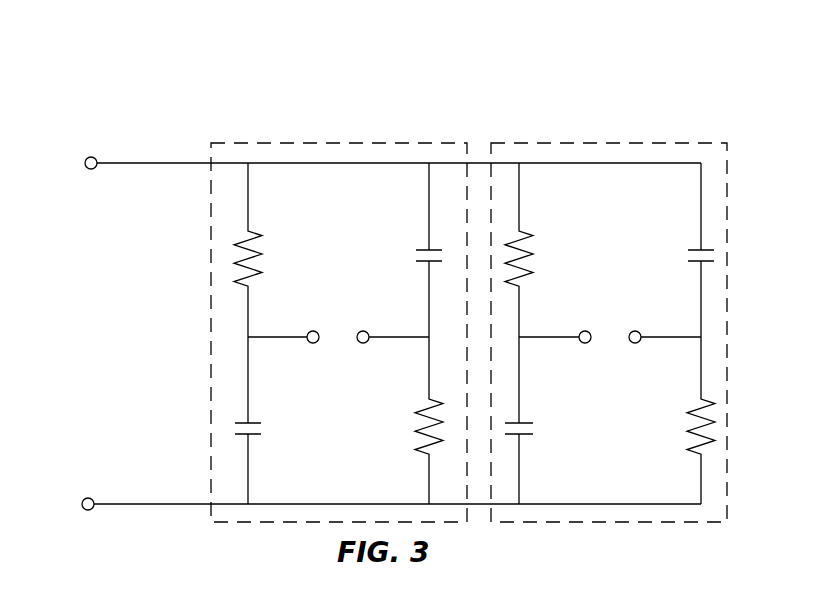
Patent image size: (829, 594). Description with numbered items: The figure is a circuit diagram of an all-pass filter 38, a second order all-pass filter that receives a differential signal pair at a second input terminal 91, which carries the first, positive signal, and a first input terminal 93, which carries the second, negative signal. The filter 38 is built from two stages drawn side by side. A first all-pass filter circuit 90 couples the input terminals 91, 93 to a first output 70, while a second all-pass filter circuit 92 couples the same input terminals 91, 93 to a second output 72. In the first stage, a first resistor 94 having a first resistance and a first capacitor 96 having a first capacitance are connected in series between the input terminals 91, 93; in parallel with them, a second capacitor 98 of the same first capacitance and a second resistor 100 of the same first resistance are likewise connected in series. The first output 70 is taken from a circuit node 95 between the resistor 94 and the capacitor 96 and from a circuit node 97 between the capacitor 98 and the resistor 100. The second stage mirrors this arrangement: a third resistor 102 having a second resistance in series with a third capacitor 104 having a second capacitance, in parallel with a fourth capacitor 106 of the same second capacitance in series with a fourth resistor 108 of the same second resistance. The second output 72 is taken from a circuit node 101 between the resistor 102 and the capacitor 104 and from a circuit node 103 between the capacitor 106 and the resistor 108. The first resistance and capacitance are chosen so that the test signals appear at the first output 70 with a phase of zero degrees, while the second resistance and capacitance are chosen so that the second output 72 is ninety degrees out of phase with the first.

The all-pass filter 38 is at (487, 77).
The first all-pass filter circuit 90 is at (293, 143).
The second all-pass filter circuit 92 is at (583, 143).
The second input terminal 91 is at (98, 177).
The first input terminal 93 is at (92, 494).
The first resistor 94 is at (233, 249).
The circuit node 95 is at (255, 333).
The first capacitor 96 is at (233, 429).
The circuit node 97 is at (424, 333).
The second capacitor 98 is at (423, 246).
The second resistor 100 is at (421, 456).
The first output 70 is at (357, 331).
The second output 72 is at (629, 332).
The circuit node 101 is at (526, 333).
The third resistor 102 is at (524, 229).
The circuit node 103 is at (694, 333).
The third capacitor 104 is at (528, 446).
The fourth capacitor 106 is at (696, 246).
The fourth resistor 108 is at (696, 456).